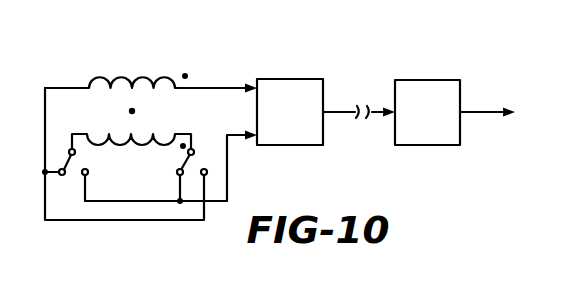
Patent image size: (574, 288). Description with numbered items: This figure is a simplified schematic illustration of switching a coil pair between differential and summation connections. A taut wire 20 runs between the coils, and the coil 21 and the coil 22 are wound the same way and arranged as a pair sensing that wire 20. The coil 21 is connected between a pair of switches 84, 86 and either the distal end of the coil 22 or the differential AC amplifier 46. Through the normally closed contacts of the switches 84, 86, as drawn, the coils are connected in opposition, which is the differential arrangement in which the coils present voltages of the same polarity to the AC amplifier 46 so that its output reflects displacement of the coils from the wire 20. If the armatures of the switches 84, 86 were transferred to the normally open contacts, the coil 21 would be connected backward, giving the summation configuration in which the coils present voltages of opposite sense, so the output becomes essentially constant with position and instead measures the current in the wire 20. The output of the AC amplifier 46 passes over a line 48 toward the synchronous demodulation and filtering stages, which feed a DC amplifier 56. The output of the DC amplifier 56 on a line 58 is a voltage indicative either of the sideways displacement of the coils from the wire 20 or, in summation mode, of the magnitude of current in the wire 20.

The taut wire 20 is at (132, 111).
The coil 21 is at (123, 145).
The coil 22 is at (143, 76).
The differential AC amplifier 46 is at (292, 78).
The line 48 is at (337, 115).
The DC amplifier 56 is at (430, 146).
The line 58 is at (472, 111).
The switch 84 is at (75, 183).
The switch 86 is at (192, 188).